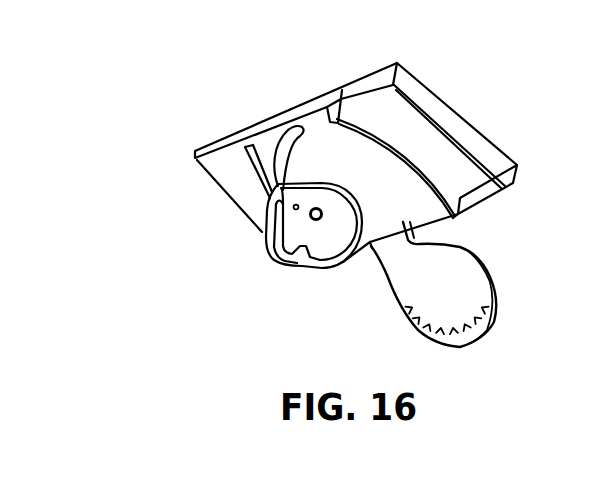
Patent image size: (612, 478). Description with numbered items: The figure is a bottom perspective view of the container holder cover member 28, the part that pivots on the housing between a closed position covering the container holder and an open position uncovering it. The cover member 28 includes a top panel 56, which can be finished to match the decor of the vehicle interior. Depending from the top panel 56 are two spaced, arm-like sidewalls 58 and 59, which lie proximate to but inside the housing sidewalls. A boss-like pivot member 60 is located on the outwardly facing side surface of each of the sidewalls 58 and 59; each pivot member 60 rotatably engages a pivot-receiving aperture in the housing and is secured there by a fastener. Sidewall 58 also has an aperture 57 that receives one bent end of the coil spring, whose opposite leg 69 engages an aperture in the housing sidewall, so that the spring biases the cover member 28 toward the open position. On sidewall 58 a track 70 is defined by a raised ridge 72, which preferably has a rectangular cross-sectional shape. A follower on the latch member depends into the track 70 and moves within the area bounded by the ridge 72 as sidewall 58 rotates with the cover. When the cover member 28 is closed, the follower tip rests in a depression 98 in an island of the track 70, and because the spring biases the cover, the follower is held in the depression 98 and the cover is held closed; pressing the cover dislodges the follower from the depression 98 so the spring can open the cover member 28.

The cover member 28 is at (263, 109).
The top panel 56 is at (308, 95).
The aperture 57 is at (299, 205).
The sidewall 58 is at (297, 181).
The pivot member 60 is at (322, 212).
The raised ridge 72 is at (264, 233).
The track 70 is at (265, 250).
The depression 98 is at (294, 248).
The sidewall 59 is at (468, 255).
The coil spring leg 69 is at (460, 346).